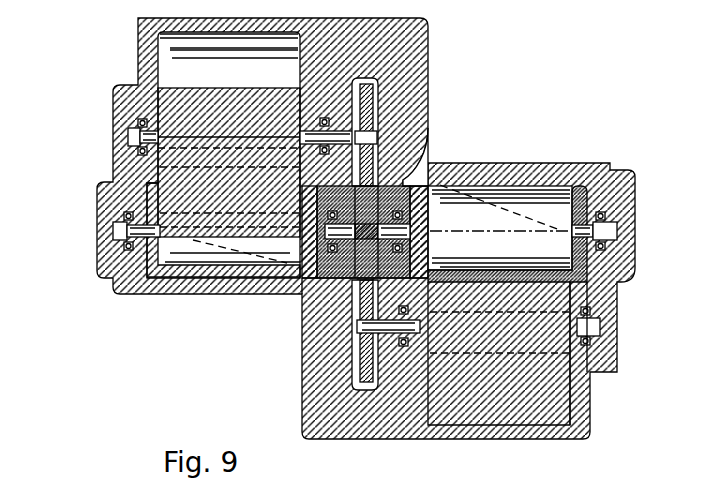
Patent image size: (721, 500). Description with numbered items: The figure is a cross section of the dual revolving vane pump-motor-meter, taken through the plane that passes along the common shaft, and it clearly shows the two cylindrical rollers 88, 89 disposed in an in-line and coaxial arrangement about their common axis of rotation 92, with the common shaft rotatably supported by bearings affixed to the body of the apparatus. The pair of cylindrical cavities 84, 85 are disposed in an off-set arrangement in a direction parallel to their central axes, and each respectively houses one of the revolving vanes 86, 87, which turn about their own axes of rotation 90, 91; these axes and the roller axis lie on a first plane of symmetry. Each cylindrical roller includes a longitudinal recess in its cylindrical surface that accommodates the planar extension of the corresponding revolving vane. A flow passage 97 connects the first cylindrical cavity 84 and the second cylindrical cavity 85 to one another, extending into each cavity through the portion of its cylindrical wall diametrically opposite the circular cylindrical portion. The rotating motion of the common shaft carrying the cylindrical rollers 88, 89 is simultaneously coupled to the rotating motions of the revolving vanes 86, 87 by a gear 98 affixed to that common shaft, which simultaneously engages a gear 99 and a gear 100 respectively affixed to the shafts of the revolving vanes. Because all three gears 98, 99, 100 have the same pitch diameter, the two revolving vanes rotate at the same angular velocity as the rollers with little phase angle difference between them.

The first cylindrical cavity 84 is at (445, 417).
The second cylindrical cavity 85 is at (203, 63).
The revolving vane 86 is at (520, 374).
The revolving vane 87 is at (183, 188).
The cylindrical roller 88 is at (583, 291).
The cylindrical roller 89 is at (205, 294).
The axis of rotation 90 is at (605, 327).
The axis of rotation 91 is at (115, 128).
The common axis of rotation 92 is at (623, 226).
The flow passage 97 is at (500, 163).
The gear 98 is at (392, 188).
The gear 99 is at (360, 357).
The gear 100 is at (372, 113).